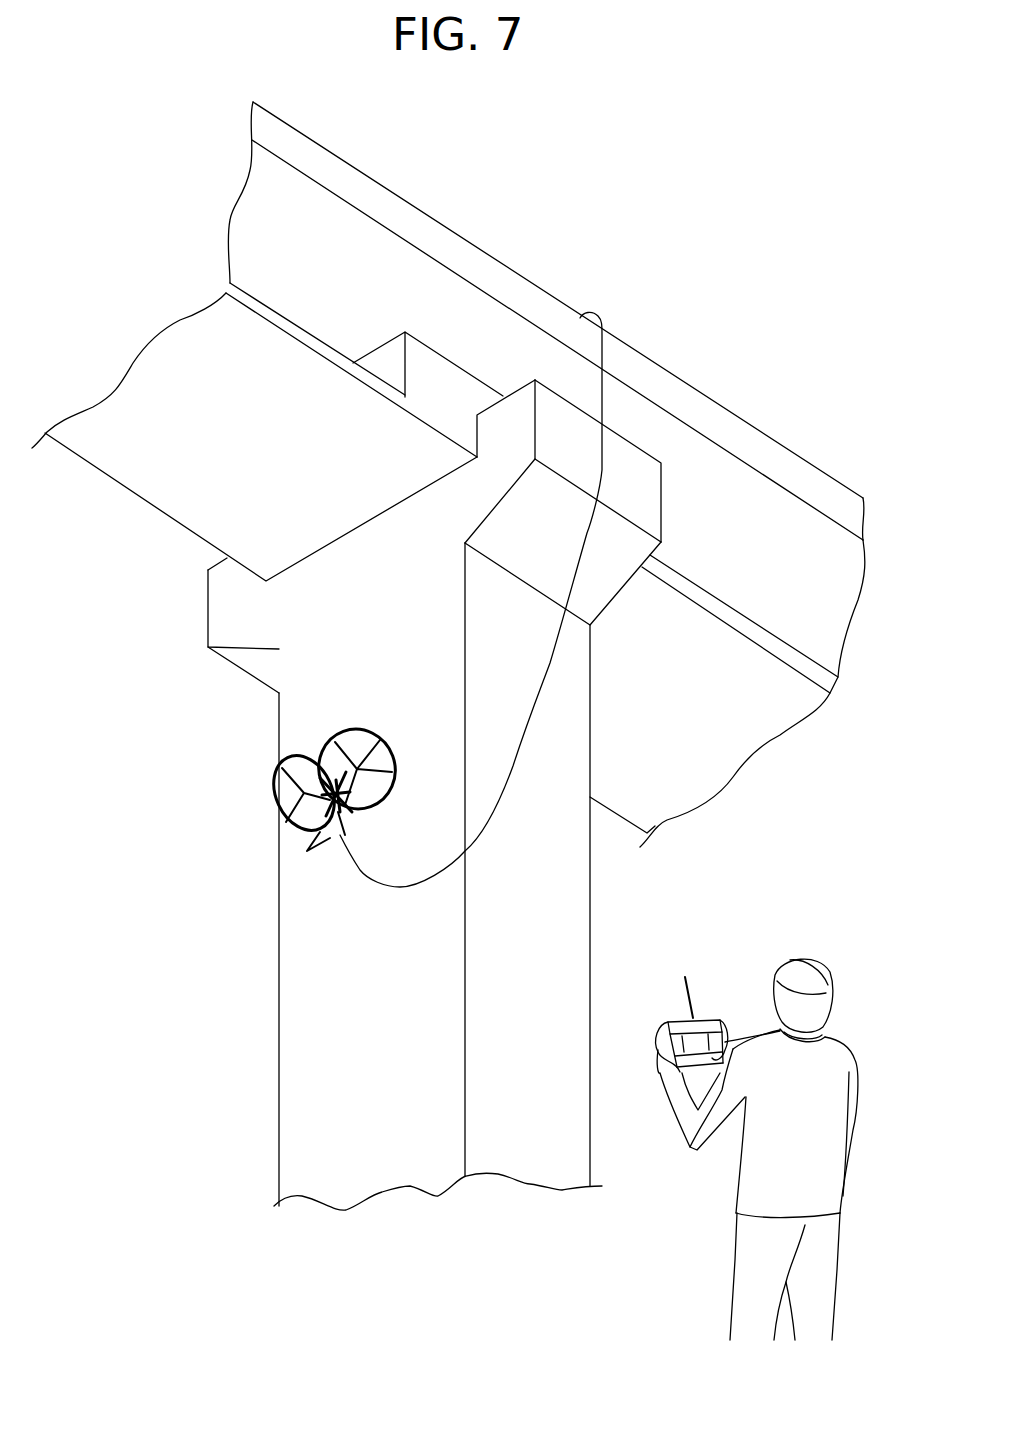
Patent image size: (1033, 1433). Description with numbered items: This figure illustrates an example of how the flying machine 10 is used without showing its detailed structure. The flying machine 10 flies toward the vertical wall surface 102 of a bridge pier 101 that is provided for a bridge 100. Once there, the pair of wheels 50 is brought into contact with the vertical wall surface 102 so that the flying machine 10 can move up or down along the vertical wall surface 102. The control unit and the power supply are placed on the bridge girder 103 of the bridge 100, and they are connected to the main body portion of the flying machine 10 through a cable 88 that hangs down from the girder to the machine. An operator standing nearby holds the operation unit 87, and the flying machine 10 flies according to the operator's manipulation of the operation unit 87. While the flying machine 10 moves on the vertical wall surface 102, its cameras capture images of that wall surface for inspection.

The flying machine 10 is at (311, 767).
The pair of wheels 50 is at (370, 730).
The operation unit 87 is at (697, 1017).
The cable 88 is at (606, 354).
The bridge 100 is at (763, 367).
The bridge pier 101 is at (279, 996).
The vertical wall surface 102 is at (301, 883).
The bridge girder 103 is at (495, 257).